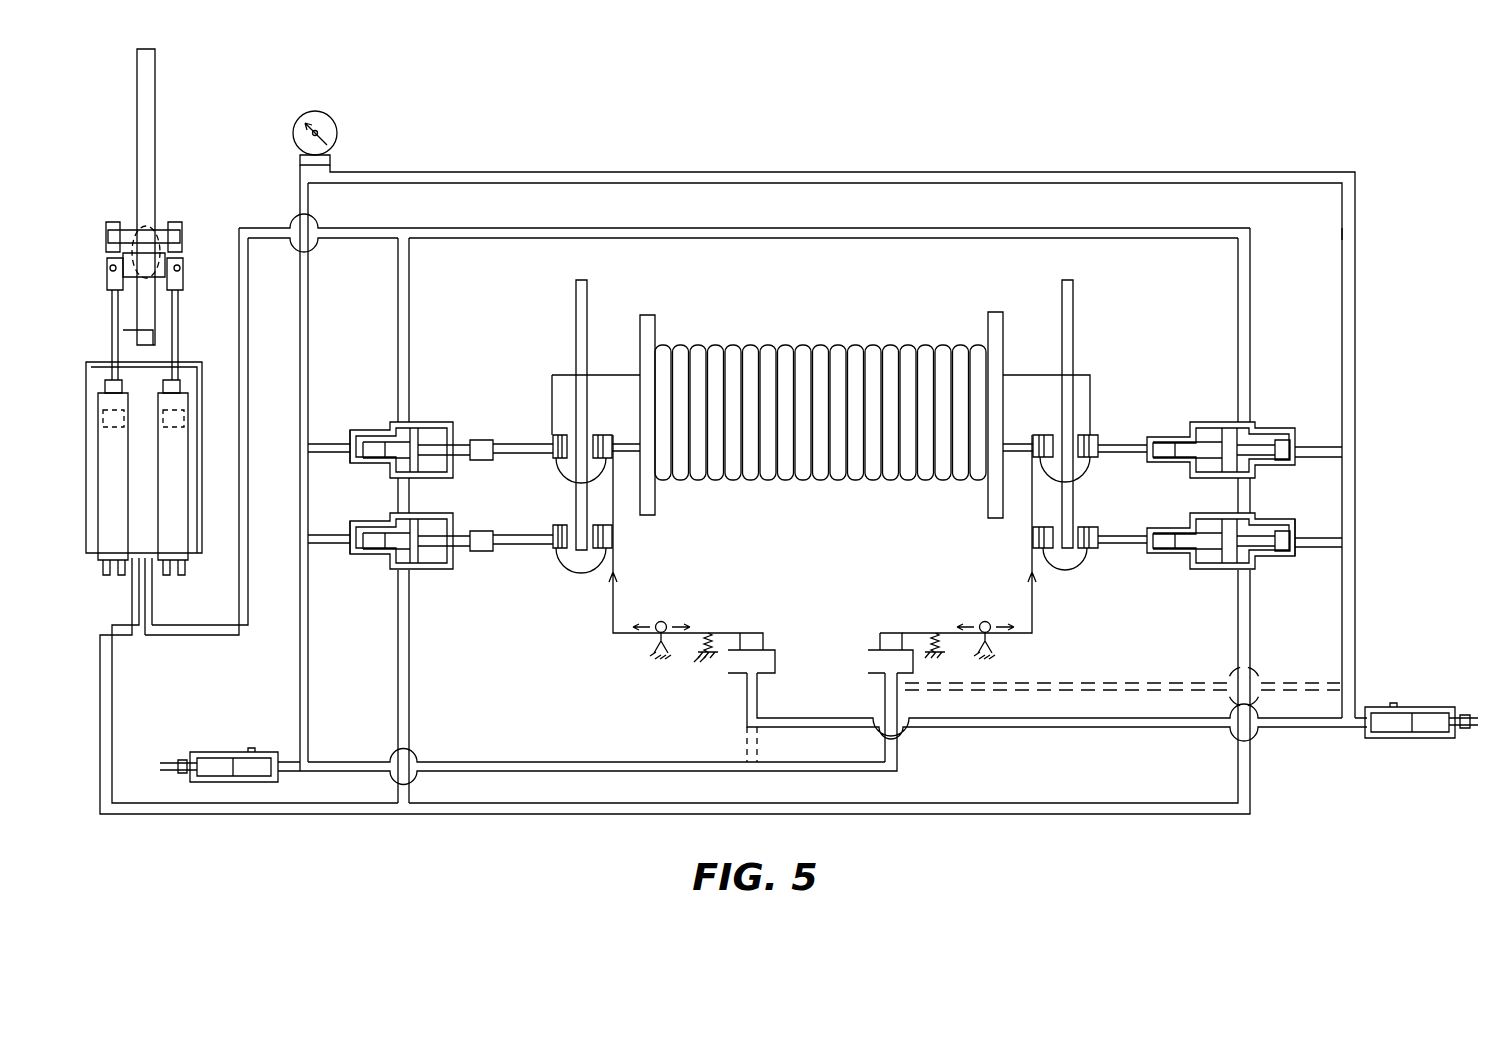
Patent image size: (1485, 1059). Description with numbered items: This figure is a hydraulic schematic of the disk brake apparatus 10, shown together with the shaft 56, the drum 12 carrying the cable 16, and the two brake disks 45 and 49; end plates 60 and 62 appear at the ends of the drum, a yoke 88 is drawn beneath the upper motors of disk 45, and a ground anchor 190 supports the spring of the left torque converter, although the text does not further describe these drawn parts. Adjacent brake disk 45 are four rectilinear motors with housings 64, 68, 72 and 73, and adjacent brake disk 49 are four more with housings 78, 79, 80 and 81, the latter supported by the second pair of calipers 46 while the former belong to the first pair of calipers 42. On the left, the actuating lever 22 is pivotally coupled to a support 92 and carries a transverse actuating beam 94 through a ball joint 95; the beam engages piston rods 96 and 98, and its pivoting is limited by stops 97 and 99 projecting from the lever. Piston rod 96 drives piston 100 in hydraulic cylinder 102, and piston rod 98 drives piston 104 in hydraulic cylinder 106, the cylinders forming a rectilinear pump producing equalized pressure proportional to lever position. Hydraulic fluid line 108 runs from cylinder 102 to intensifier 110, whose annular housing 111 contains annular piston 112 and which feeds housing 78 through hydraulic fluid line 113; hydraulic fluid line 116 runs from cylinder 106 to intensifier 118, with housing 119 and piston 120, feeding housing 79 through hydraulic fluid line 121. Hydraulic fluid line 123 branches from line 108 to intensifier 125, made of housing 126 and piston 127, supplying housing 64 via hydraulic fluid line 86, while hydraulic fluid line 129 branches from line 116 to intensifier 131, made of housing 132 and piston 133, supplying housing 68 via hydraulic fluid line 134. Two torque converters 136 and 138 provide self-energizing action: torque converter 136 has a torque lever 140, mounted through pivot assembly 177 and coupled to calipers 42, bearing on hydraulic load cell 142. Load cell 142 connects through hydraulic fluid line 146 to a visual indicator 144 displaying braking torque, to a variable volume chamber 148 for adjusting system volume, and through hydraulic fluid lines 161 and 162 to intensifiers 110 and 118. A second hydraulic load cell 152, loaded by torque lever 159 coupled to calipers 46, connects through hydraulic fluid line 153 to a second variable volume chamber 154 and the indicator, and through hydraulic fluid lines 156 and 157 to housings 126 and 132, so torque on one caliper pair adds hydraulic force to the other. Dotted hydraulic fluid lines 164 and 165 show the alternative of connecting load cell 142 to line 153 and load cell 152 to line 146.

The disk brake apparatus 10 is at (1372, 232).
The drum 12 is at (700, 339).
The cable 16 is at (880, 341).
The actuating lever 22 is at (164, 83).
The first pair of calipers 42 is at (580, 578).
The brake disk 45 is at (571, 316).
The second pair of calipers 46 is at (1066, 578).
The brake disk 49 is at (1076, 298).
The shaft 56 is at (1091, 374).
The end plate 60 is at (996, 312).
The end plate 62 is at (648, 315).
The housing 64 is at (554, 435).
The housing 68 is at (554, 548).
The housing 72 is at (606, 435).
The housing 73 is at (615, 540).
The housing 78 is at (1094, 435).
The housing 79 is at (1088, 549).
The housing 80 is at (1035, 458).
The housing 81 is at (1031, 537).
The hydraulic fluid line 86 is at (505, 444).
The yoke 88 is at (560, 482).
The support 92 is at (196, 362).
The transverse actuating beam 94 is at (108, 241).
The ball joint 95 is at (160, 222).
The piston rod 96 is at (180, 300).
The stop 97 is at (177, 229).
The piston rod 98 is at (112, 305).
The stop 99 is at (114, 222).
The piston 100 is at (180, 418).
The hydraulic cylinder 102 is at (178, 490).
The piston 104 is at (103, 415).
The hydraulic cylinder 106 is at (120, 463).
The hydraulic fluid line 108 is at (248, 312).
The hydraulic intensifier 110 is at (1207, 419).
The annular housing 111 is at (1251, 422).
The annular piston 112 is at (1230, 480).
The hydraulic fluid line 113 is at (1130, 453).
The hydraulic fluid line 116 is at (112, 695).
The hydraulic intensifier 118 is at (1184, 574).
The housing 119 is at (1287, 520).
The piston 120 is at (1220, 575).
The hydraulic fluid line 121 is at (1129, 536).
The hydraulic fluid line 123 is at (410, 345).
The intensifier 125 is at (386, 416).
The housing 126 is at (352, 428).
The piston 127 is at (416, 478).
The hydraulic fluid line 129 is at (410, 692).
The intensifier 131 is at (374, 570).
The housing 132 is at (366, 515).
The piston 133 is at (428, 570).
The hydraulic fluid line 134 is at (512, 544).
The torque converter 136 is at (642, 656).
The torque converter 138 is at (1010, 648).
The torque lever 140 is at (709, 628).
The hydraulic load cell 142 is at (771, 648).
The visual indicator 144 is at (342, 124).
The hydraulic fluid line 146 is at (1063, 172).
The variable volume chamber 148 is at (1406, 703).
The hydraulic load cell 152 is at (866, 650).
The hydraulic fluid line 153 is at (308, 660).
The variable volume chamber 154 is at (247, 746).
The hydraulic fluid line 156 is at (326, 444).
The hydraulic fluid line 157 is at (326, 535).
The torque lever 159 is at (964, 620).
The hydraulic fluid line 161 is at (1320, 447).
The hydraulic fluid line 162 is at (1320, 547).
The hydraulic fluid line 164 is at (762, 764).
The hydraulic fluid line 165 is at (1180, 682).
The pivot assembly 177 is at (668, 618).
The anchor 190 is at (699, 652).